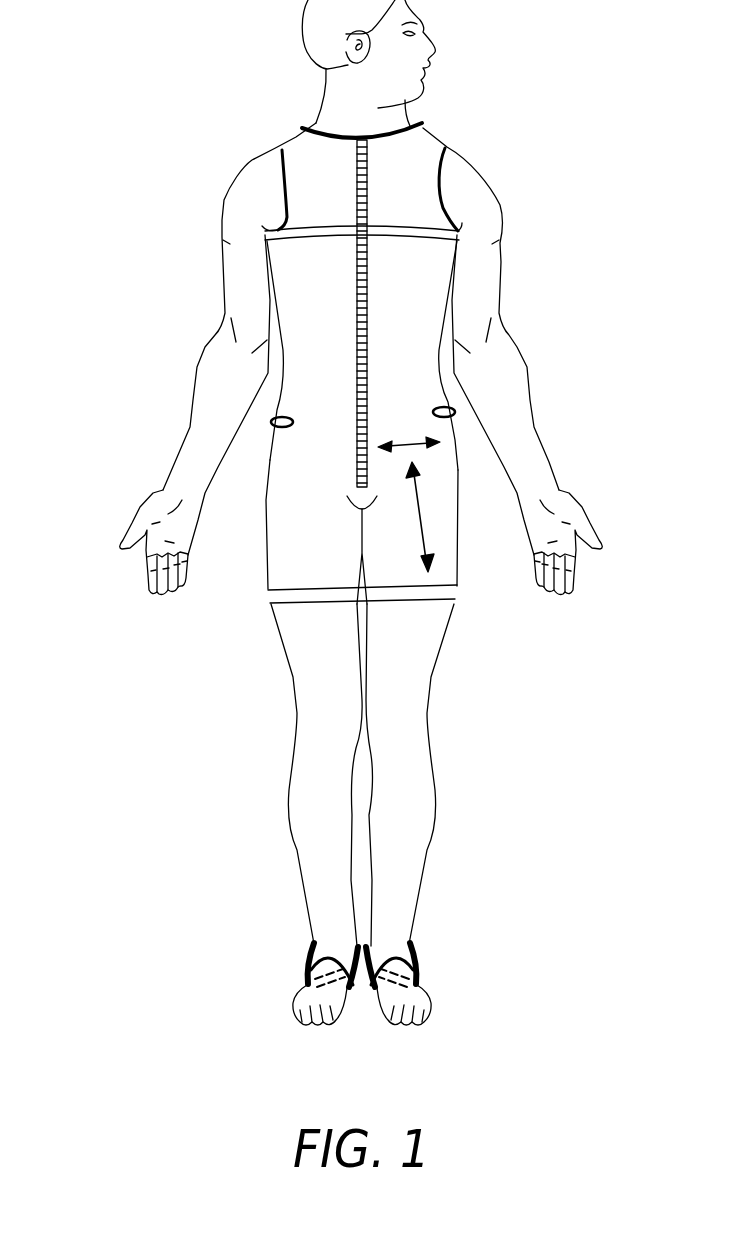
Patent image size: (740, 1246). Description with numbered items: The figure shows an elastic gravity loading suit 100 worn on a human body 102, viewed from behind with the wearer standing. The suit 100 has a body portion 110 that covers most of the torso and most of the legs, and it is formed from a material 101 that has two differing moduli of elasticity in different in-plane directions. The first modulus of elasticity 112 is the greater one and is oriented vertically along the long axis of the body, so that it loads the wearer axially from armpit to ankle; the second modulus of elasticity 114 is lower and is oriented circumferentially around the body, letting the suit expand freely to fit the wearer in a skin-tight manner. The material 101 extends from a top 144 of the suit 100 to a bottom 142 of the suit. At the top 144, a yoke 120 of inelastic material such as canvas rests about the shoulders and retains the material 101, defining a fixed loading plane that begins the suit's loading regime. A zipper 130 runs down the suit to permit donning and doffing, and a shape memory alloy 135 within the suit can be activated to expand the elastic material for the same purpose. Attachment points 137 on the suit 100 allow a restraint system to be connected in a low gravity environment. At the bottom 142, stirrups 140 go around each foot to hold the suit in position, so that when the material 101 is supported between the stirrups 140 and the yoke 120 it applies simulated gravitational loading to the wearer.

The suit 100 is at (262, 541).
The material 101 is at (292, 742).
The human body 102 is at (361, 512).
The body portion 110 is at (332, 564).
The first modulus of elasticity 112 is at (413, 498).
The second modulus of elasticity 114 is at (405, 440).
The yoke 120 is at (428, 137).
The zipper 130 is at (370, 192).
The shape memory alloy 135 is at (268, 590).
The attachment points 137 is at (290, 415).
The stirrups 140 is at (306, 966).
The bottom 142 is at (322, 1000).
The top 144 is at (292, 339).